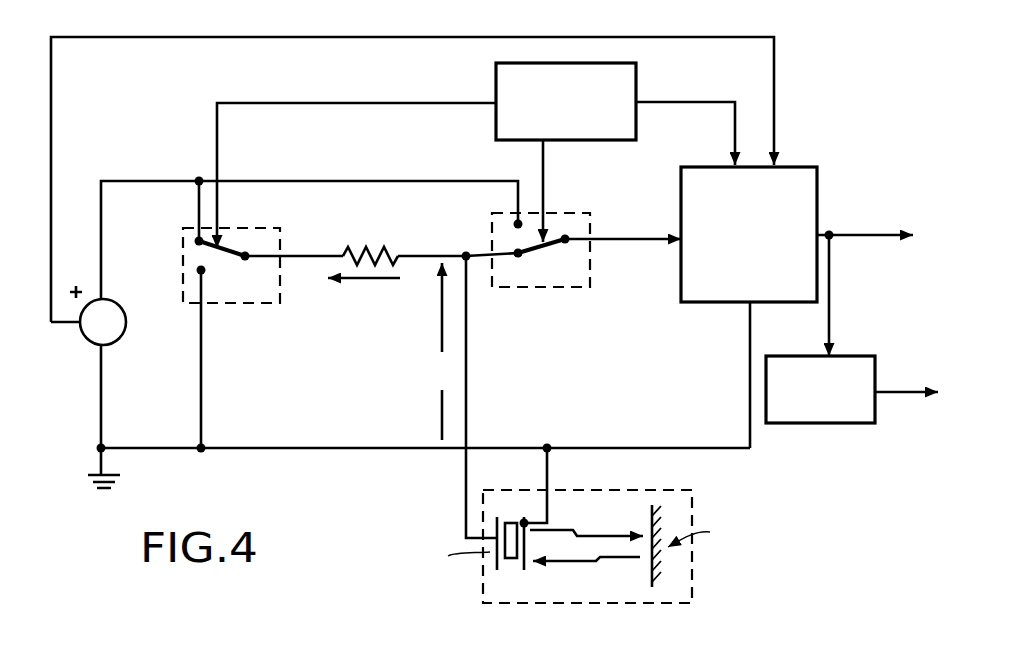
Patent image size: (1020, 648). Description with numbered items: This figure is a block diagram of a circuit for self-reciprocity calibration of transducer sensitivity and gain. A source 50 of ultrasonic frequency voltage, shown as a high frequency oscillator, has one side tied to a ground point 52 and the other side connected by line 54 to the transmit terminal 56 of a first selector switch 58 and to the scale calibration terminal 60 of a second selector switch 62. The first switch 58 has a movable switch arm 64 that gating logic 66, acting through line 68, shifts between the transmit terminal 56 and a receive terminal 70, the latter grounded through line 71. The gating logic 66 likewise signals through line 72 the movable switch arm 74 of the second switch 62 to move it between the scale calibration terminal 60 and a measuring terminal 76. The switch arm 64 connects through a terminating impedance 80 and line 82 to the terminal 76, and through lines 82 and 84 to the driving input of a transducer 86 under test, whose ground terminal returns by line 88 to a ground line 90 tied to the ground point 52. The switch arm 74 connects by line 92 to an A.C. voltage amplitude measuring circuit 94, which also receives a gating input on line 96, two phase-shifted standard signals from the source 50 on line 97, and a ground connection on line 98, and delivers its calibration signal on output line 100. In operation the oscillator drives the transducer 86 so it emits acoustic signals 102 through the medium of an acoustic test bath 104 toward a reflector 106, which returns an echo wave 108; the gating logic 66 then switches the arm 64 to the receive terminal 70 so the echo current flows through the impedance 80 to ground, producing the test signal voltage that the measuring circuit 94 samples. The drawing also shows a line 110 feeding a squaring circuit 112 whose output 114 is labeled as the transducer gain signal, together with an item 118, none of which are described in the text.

The source of ultrasonic frequency voltage 50 is at (110, 343).
The ground point 52 is at (96, 475).
The line 54 is at (100, 256).
The transmit terminal 56 is at (195, 240).
The first selector switch 58 is at (262, 198).
The scale calibration terminal 60 is at (514, 225).
The second selector switch 62 is at (563, 213).
The movable switch arm 64 is at (232, 255).
The gating logic 66 is at (496, 110).
The line 68 is at (362, 104).
The receive terminal 70 is at (198, 270).
The line 71 is at (202, 348).
The line 72 is at (543, 190).
The movable switch arm 74 is at (557, 235).
The measuring terminal 76 is at (521, 256).
The terminating impedance 80 is at (343, 253).
The line 82 is at (427, 255).
The line 84 is at (468, 392).
The transducer 86 is at (505, 510).
The line 88 is at (548, 475).
The ground line 90 is at (267, 447).
The line 92 is at (638, 212).
The A.C. voltage amplitude measuring circuit 94 is at (717, 167).
The line 96 is at (672, 102).
The line 97 is at (52, 84).
The line 98 is at (750, 333).
The output line 100 is at (860, 234).
The acoustic signals 102 is at (576, 528).
The acoustic test bath 104 is at (692, 598).
The reflector 106 is at (650, 510).
The echo wave 108 is at (585, 563).
The squaring circuit input line 110 is at (829, 315).
The squaring circuit 112 is at (776, 424).
The transducer gain signal output 114 is at (893, 392).
The test fixture 118 is at (843, 647).